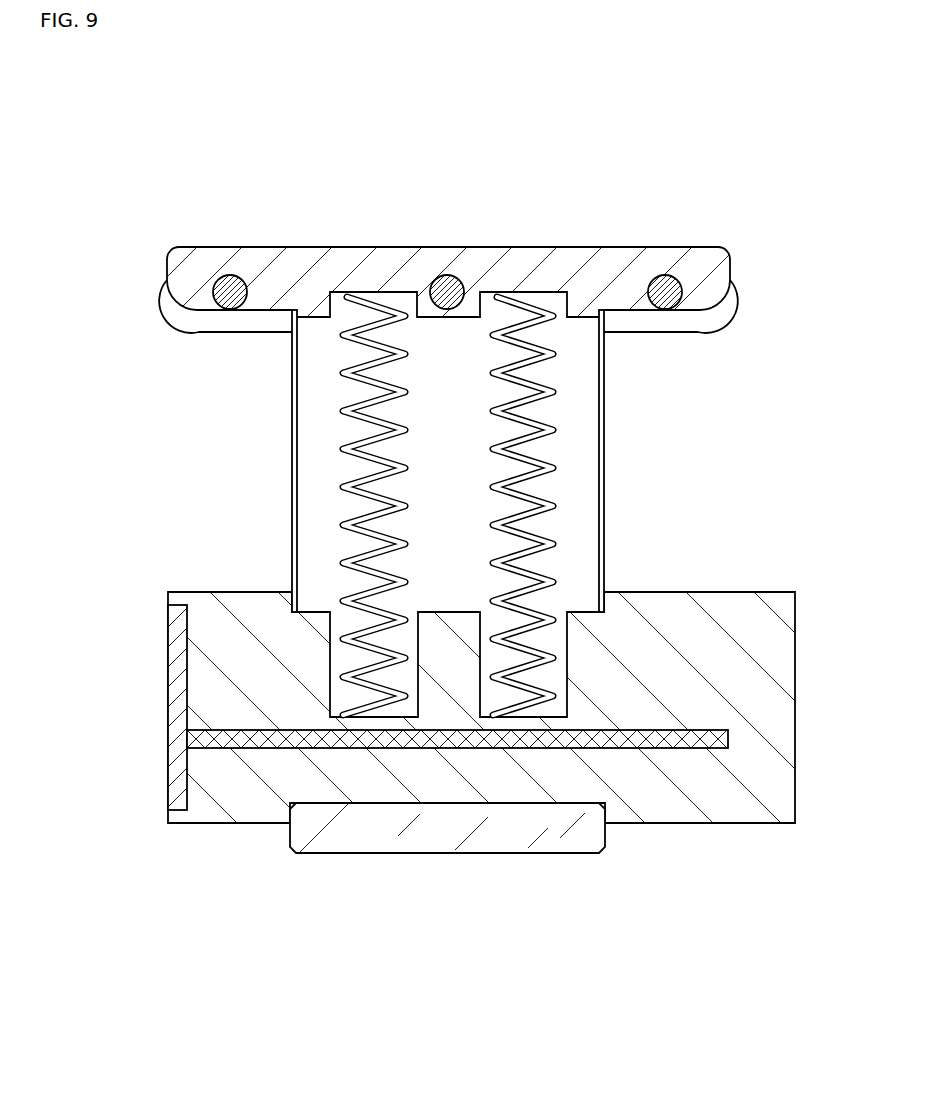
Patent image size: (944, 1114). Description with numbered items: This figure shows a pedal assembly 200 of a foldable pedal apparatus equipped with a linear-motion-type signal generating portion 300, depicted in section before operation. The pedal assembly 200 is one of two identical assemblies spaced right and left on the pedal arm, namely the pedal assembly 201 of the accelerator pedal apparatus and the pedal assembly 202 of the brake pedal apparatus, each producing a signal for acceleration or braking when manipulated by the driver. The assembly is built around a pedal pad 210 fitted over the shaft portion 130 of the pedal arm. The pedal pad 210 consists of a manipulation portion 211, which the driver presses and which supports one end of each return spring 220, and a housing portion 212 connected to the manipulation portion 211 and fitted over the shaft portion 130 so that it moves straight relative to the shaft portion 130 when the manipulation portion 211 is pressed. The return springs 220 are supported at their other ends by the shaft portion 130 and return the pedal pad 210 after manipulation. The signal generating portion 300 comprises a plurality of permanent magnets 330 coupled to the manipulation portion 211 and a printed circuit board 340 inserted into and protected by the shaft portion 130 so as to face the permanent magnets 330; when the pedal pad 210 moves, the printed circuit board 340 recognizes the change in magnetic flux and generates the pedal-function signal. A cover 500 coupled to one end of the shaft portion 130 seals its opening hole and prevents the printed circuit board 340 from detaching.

The shaft portion 130 is at (253, 793).
The pedal assembly 200 is at (507, 220).
The pedal assembly of accelerator pedal apparatus 201 is at (225, 306).
The pedal assembly of brake pedal apparatus 202 is at (671, 306).
The pedal pad 210 is at (427, 561).
The manipulation portion 211 is at (345, 275).
The housing portion 212 is at (463, 827).
The return spring 220 is at (396, 396).
The signal generating portion 300 is at (442, 520).
The permanent magnet 330 is at (229, 288).
The printed circuit board 340 is at (657, 750).
The cover 500 is at (177, 703).